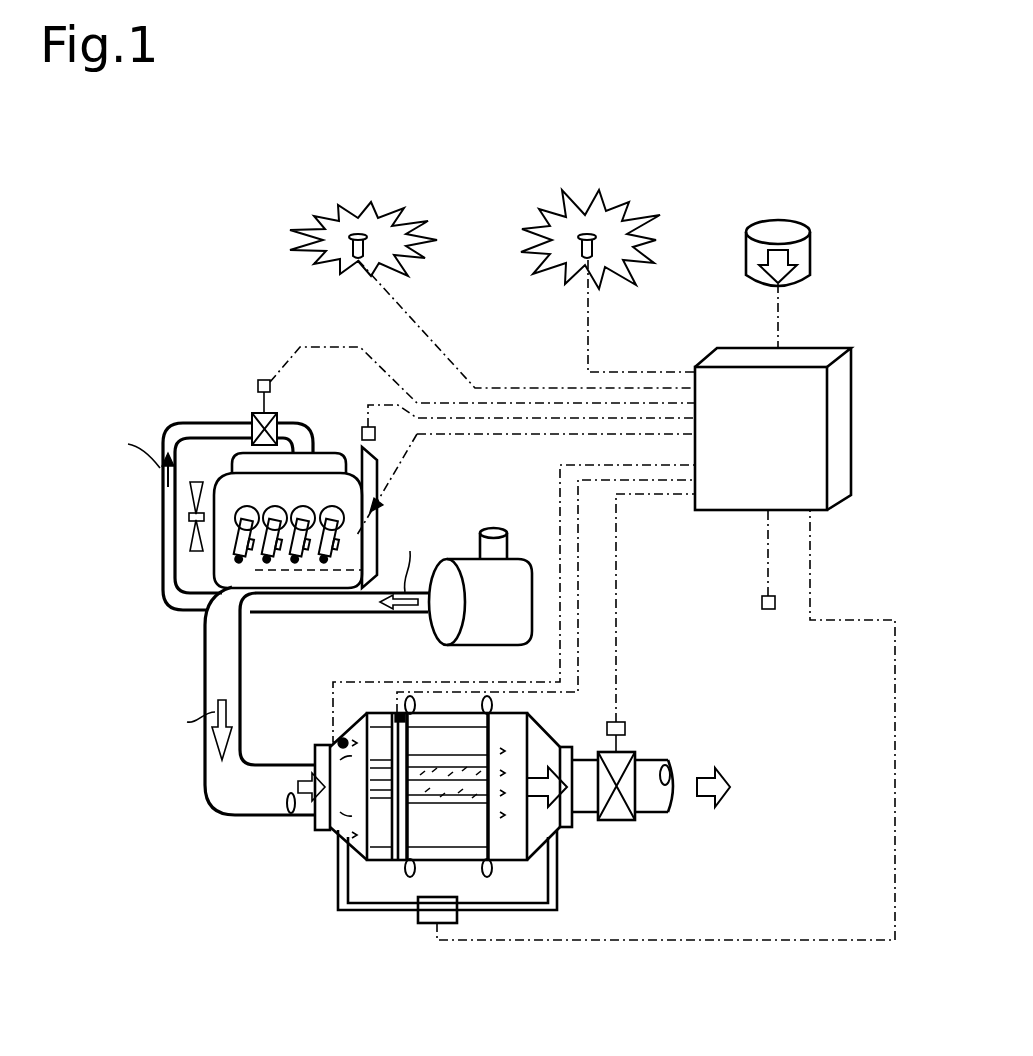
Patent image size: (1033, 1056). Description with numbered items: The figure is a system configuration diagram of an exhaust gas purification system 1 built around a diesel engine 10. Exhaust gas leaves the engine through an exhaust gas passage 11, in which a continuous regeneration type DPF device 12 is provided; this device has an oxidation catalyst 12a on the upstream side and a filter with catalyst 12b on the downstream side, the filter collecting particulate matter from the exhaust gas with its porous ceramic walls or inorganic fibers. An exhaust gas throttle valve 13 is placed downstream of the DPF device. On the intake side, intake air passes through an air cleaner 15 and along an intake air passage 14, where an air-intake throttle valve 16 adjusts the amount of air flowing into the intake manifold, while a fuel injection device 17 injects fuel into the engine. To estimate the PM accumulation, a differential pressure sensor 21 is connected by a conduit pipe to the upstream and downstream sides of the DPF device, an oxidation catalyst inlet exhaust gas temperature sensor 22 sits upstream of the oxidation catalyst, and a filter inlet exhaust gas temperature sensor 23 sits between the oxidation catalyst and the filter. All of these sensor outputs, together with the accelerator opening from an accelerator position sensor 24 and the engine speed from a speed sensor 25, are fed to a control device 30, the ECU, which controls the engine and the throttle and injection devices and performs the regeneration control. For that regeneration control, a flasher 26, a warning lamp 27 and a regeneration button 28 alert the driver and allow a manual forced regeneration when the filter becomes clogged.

The exhaust gas purification system 1 is at (714, 238).
The diesel engine 10 is at (230, 482).
The exhaust gas passage 11 is at (232, 797).
The continuous regeneration type DPF device 12 is at (530, 860).
The oxidation catalyst 12a is at (384, 832).
The filter with catalyst 12b is at (455, 833).
The exhaust gas throttle valve 13 is at (634, 753).
The intake air passage 14 is at (160, 500).
The air cleaner 15 is at (470, 571).
The air-intake throttle valve 16 is at (262, 410).
The fuel injection device 17 is at (242, 540).
The differential pressure sensor 21 is at (430, 925).
The oxidation catalyst inlet exhaust gas temperature sensor 22 is at (340, 740).
The filter inlet exhaust gas temperature sensor 23 is at (398, 714).
The accelerator position sensor 24 is at (768, 612).
The speed sensor 25 is at (365, 425).
The flasher 26 is at (358, 206).
The warning lamp 27 is at (587, 206).
The regeneration button 28 is at (795, 229).
The control device 30 is at (843, 432).